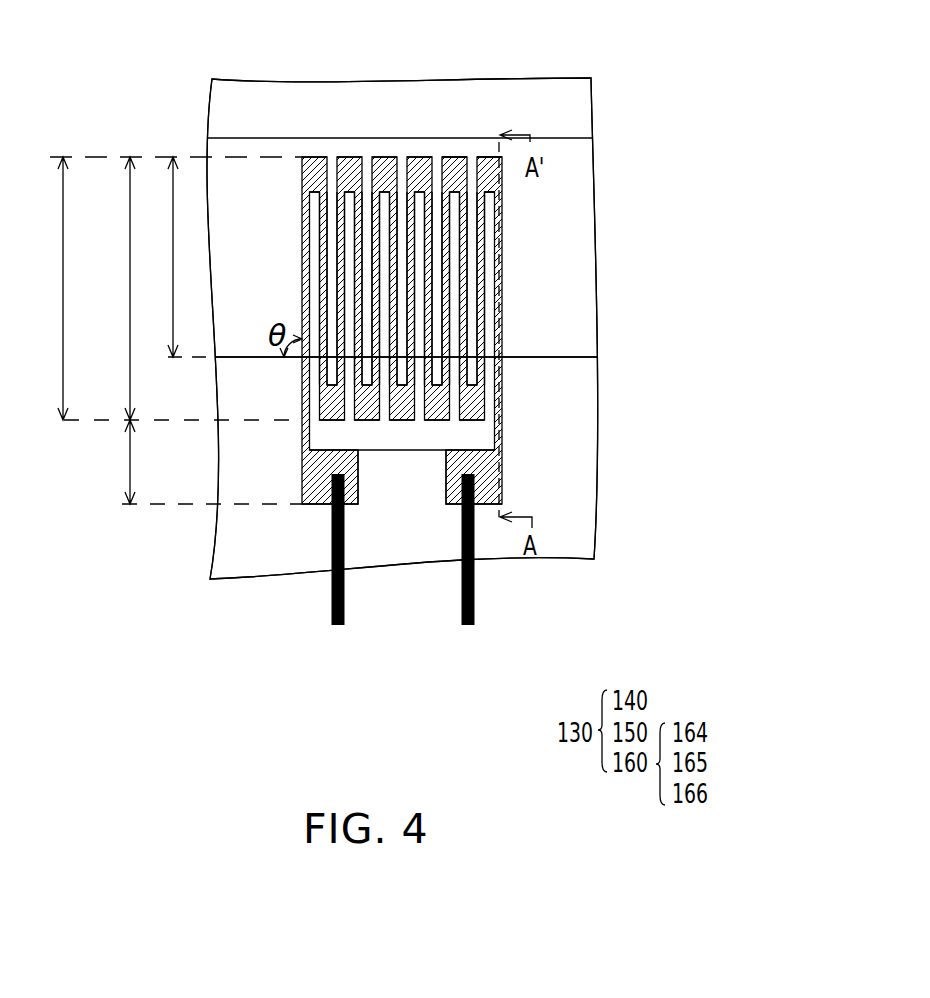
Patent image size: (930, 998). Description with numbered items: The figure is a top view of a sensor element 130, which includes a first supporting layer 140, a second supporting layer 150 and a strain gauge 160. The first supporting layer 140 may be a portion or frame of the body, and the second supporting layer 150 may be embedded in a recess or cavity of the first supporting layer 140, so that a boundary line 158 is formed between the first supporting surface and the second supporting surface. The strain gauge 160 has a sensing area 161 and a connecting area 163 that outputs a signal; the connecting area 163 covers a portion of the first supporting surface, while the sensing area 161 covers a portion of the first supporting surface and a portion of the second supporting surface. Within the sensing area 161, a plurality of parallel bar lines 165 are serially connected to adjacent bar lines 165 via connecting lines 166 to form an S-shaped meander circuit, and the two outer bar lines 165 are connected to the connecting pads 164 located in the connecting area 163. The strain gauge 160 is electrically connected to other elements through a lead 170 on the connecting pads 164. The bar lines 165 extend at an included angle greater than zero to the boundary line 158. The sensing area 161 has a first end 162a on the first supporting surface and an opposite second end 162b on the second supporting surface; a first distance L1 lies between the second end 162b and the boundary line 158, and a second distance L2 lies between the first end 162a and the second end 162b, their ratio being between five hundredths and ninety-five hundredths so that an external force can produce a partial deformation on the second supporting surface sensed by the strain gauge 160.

The sensor element 130 is at (402, 328).
The first supporting layer 140 is at (575, 103).
The second supporting layer 150 is at (582, 200).
The boundary line 158 is at (552, 356).
The strain gauge 160 is at (402, 330).
The sensing area 161 is at (114, 288).
The first end 162a is at (482, 424).
The second end 162b is at (477, 156).
The connecting area 163 is at (111, 462).
The connecting pads 164 is at (489, 498).
The bar lines 165 is at (377, 201).
The connecting lines 166 is at (491, 157).
The lead 170 is at (462, 600).
The first distance L1 is at (160, 257).
The second distance L2 is at (50, 288).